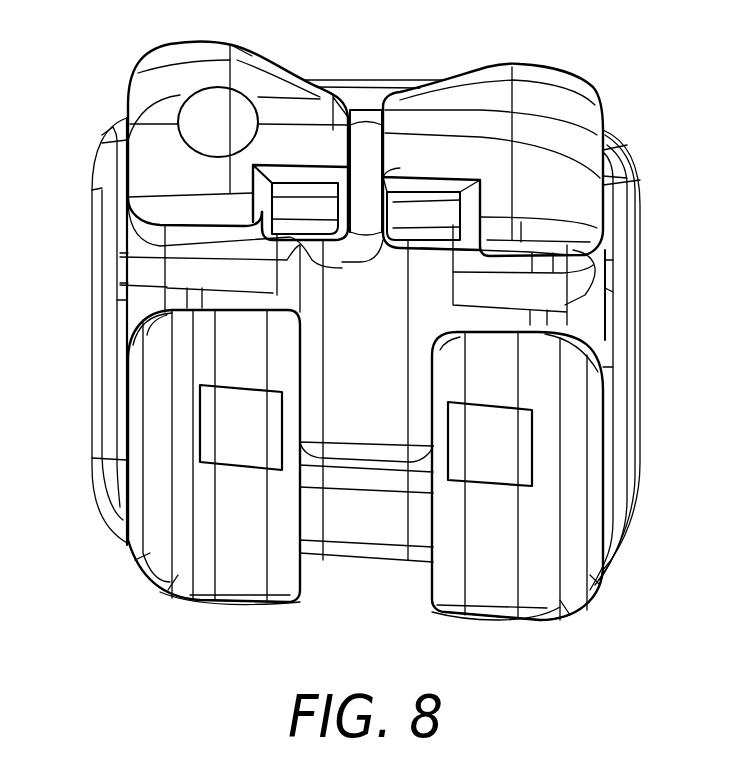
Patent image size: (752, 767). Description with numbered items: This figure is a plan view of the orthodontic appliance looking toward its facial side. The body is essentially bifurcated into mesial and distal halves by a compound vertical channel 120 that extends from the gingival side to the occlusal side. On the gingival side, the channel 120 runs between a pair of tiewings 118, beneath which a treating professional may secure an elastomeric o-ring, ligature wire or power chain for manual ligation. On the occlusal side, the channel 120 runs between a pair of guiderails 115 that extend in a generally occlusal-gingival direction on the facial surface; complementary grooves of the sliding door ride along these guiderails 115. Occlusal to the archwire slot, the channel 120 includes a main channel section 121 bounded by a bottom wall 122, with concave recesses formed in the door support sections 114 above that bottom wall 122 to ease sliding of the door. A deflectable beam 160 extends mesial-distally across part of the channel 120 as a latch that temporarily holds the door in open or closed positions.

The door support sections 114 is at (150, 383).
The guiderails 115 is at (236, 582).
The tiewings 118 is at (545, 80).
The channel 120 is at (363, 130).
The main channel section 121 is at (378, 418).
The bottom wall 122 is at (398, 538).
The deflectable beam 160 is at (418, 485).